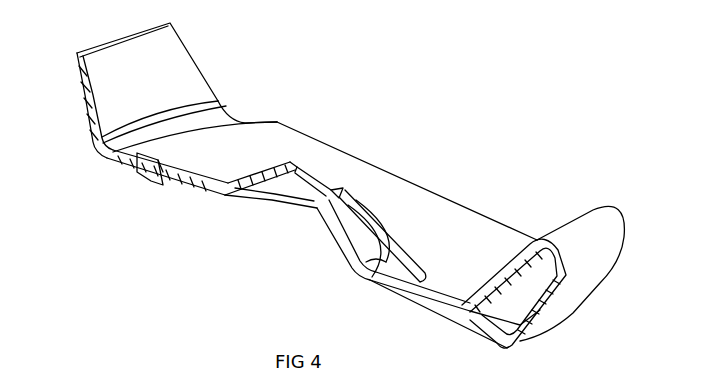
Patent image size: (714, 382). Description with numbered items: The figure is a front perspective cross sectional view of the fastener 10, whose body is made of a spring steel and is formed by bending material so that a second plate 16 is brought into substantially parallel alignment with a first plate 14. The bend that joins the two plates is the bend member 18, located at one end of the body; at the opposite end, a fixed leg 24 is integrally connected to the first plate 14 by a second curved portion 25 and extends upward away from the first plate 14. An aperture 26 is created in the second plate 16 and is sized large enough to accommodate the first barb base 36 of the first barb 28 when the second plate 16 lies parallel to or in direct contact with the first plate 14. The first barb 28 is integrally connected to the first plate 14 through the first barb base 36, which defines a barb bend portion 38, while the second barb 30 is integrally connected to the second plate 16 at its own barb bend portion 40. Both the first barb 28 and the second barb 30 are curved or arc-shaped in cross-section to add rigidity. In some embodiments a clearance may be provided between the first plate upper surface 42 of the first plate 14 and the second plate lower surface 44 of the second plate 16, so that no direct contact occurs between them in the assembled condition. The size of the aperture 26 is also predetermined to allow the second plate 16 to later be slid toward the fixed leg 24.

The fastener 10 is at (392, 130).
The first plate 14 is at (475, 331).
The second plate 16 is at (281, 128).
The bend member 18 is at (585, 226).
The fixed leg 24 is at (79, 75).
The second curved portion 25 is at (219, 106).
The aperture 26 is at (400, 237).
The first barb 28 is at (344, 201).
The second barb 30 is at (291, 168).
The first barb base 36 is at (377, 265).
The barb bend portion 38 is at (348, 276).
The barb bend portion 40 is at (225, 196).
The first plate upper surface 42 is at (131, 152).
The second plate lower surface 44 is at (441, 300).